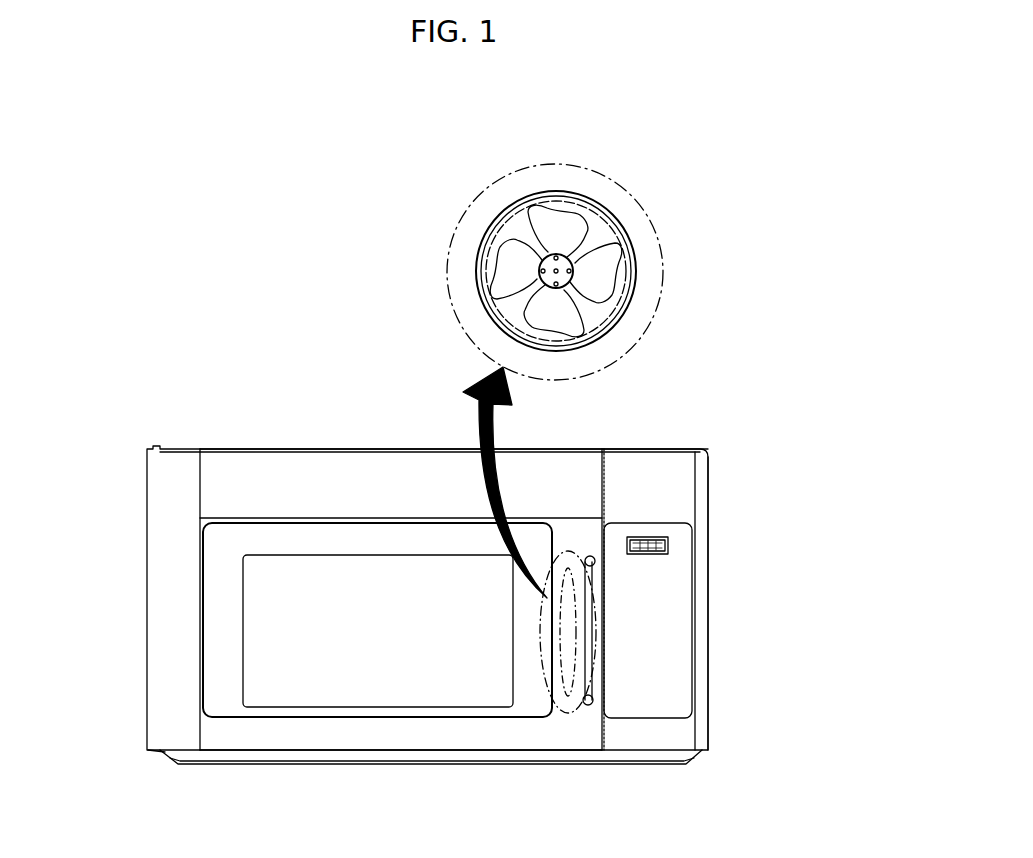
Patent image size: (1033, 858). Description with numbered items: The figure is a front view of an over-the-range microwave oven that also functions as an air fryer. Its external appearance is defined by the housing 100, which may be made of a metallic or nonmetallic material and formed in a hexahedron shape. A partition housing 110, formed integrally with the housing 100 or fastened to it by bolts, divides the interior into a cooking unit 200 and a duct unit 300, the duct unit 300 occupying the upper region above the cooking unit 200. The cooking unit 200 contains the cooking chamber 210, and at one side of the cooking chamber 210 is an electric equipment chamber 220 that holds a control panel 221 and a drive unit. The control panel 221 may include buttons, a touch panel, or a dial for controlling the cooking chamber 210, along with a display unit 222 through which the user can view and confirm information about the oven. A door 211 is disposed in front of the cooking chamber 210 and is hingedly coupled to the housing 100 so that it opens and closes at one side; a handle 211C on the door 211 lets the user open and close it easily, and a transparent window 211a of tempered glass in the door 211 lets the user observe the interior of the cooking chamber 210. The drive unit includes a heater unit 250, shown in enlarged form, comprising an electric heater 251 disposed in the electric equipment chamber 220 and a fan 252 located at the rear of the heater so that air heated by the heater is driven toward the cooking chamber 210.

The housing 100 is at (146, 479).
The partition housing 110 is at (222, 518).
The duct unit 300 is at (290, 479).
The cooking unit 200 is at (800, 391).
The cooking chamber 210 is at (555, 522).
The door 211 is at (297, 732).
The transparent window 211a is at (420, 676).
The handle 211C is at (603, 720).
The electric equipment chamber 220 is at (700, 632).
The control panel 221 is at (655, 677).
The display unit 222 is at (668, 537).
The heater unit 250 is at (567, 697).
The electric heater 251 is at (570, 265).
The fan 252 is at (578, 227).